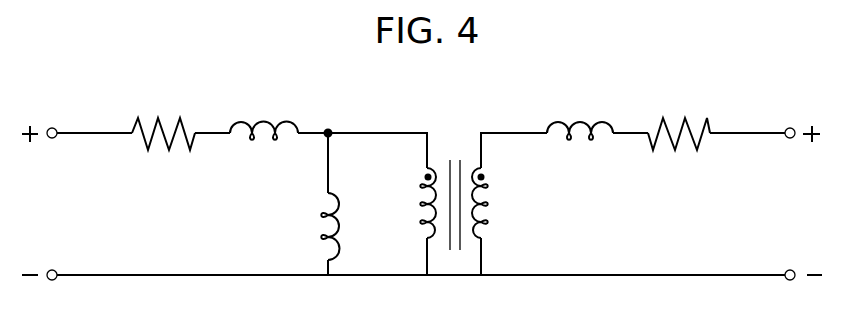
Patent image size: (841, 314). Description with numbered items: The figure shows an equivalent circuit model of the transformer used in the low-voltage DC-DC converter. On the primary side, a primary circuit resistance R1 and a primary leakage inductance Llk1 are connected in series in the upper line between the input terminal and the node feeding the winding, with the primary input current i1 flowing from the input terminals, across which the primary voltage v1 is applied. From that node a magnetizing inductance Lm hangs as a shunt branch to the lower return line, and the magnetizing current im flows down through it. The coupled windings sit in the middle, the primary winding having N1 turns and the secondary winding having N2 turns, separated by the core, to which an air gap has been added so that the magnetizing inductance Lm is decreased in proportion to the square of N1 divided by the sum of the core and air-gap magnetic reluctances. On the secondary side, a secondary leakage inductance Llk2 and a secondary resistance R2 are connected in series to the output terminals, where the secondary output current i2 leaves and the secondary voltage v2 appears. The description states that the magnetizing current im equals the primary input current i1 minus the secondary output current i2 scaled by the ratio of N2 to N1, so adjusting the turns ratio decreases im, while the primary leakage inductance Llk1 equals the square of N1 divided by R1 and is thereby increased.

The primary circuit resistance R1 is at (163, 121).
The primary leakage inductance Llk1 is at (264, 116).
The primary input current i1 is at (106, 143).
The primary voltage v1 is at (30, 204).
The magnetizing current im is at (340, 140).
The magnetizing inductance Lm is at (310, 226).
The primary turns N1 is at (410, 203).
The secondary turns N2 is at (497, 203).
The secondary leakage inductance Llk2 is at (580, 116).
The secondary winding resistance R2 is at (679, 121).
The secondary output current i2 is at (730, 147).
The secondary voltage v2 is at (811, 204).